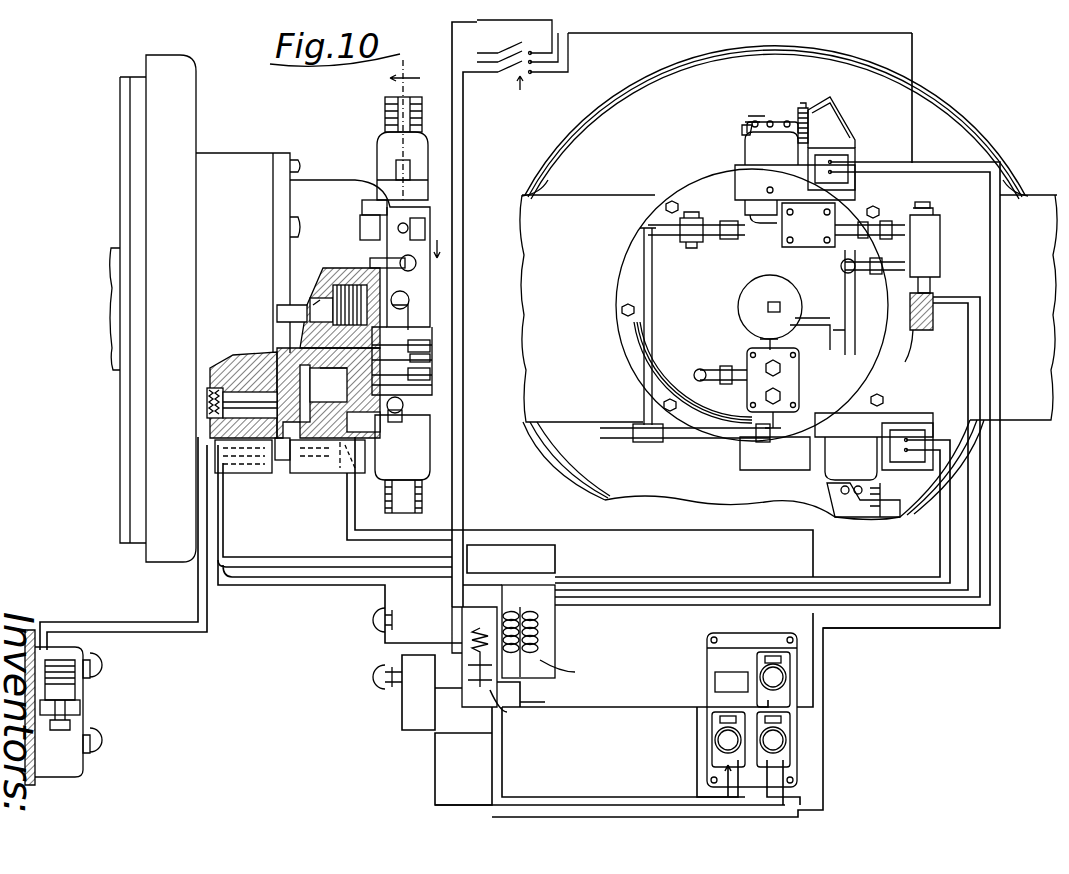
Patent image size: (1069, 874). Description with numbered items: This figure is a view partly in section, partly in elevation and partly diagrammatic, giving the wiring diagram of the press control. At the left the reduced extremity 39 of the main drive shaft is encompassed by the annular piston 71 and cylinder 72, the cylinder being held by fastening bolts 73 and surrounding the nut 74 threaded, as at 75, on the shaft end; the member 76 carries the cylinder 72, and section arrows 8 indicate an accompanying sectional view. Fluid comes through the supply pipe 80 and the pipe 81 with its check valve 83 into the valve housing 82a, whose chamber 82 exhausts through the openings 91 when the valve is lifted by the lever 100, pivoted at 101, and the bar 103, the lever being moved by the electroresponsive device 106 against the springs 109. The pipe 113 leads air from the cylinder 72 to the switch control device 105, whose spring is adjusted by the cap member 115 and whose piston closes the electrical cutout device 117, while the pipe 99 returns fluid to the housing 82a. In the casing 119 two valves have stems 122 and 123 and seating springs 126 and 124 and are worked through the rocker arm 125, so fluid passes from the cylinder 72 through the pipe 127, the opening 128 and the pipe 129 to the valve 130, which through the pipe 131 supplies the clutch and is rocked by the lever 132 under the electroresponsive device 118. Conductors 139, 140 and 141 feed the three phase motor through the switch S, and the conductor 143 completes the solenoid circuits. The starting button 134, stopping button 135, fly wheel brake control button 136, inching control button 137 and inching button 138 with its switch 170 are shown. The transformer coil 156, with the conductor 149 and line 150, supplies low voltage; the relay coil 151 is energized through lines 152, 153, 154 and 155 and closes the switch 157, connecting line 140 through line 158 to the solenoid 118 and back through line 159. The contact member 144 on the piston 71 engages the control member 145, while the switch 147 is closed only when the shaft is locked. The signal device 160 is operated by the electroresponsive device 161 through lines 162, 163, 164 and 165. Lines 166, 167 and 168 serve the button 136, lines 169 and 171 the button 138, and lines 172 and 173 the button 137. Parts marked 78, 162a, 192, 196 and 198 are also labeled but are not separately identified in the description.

The section line 8 is at (417, 164).
The reduced extremity 39 is at (313, 305).
The piston 71 is at (240, 395).
The cylinder 72 is at (290, 362).
The fastening bolts 73 is at (296, 160).
The nut 74 is at (305, 280).
The threads 75 is at (333, 300).
The member 76 is at (362, 200).
The piston 78 is at (285, 400).
The supply pipe 80 is at (440, 432).
The pipe 81 is at (378, 200).
The chamber 82 is at (360, 222).
The valve housing 82a is at (378, 145).
The check valve 83 is at (692, 242).
The openings 91 is at (196, 112).
The pipe 99 is at (440, 215).
The lever 100 is at (785, 115).
The pivot 101 is at (770, 122).
The bar 103 is at (742, 128).
The switch control device 105 is at (940, 230).
The electroresponsive device 106 is at (857, 145).
The spring 109 is at (385, 115).
The pipe 113 is at (372, 262).
The adjustable nut or cap member 115 is at (935, 206).
The electrical cutout device 117 is at (908, 313).
The electroresponsive device 118 is at (930, 425).
The casing 119 is at (747, 395).
The stem 122 is at (470, 385).
The stem 123 is at (405, 412).
The spring 124 is at (435, 395).
The rocker arm 125 is at (330, 385).
The spring 126 is at (435, 360).
The pipe 127 is at (705, 380).
The opening 128 is at (435, 348).
The pipe 129 is at (435, 325).
The valve 130 is at (654, 447).
The pipe 131 is at (435, 302).
The lever 132 is at (390, 505).
The starting button 134 is at (372, 690).
The stopping button 135 is at (372, 615).
The fly wheel brake control button 136 is at (105, 665).
The inching control button 137 is at (712, 738).
The inching button 138 is at (790, 750).
The conductor 139 is at (452, 590).
The conductor 140 is at (445, 622).
The conductor 141 is at (478, 22).
The conductor 143 is at (908, 175).
The contact member 144 is at (288, 470).
The control member 145 is at (300, 473).
The switch 147 is at (337, 476).
The conductor 149 is at (535, 695).
The line 150 is at (517, 709).
The relay coil 151 is at (482, 640).
The line 152 is at (390, 640).
The line 153 is at (218, 521).
The line 154 is at (223, 530).
The conductor 155 is at (940, 297).
The transformer coil 156 is at (512, 620).
The switch 157 is at (435, 688).
The line 158 is at (950, 548).
The line 159 is at (624, 567).
The signal device 160 is at (83, 706).
The electroresponsive device 161 is at (83, 650).
The line 162 is at (223, 545).
The push button 162a is at (105, 750).
The line 163 is at (198, 481).
The line 164 is at (190, 634).
The line 165 is at (405, 577).
The line 166 is at (615, 707).
The line 167 is at (358, 510).
The line 168 is at (347, 522).
The line 169 is at (527, 792).
The switch 170 is at (790, 770).
The line 171 is at (436, 778).
The line 172 is at (697, 757).
The line 173 is at (955, 163).
The wire 192 is at (785, 35).
The switch box 196 is at (250, 473).
The relay armature 198 is at (575, 672).